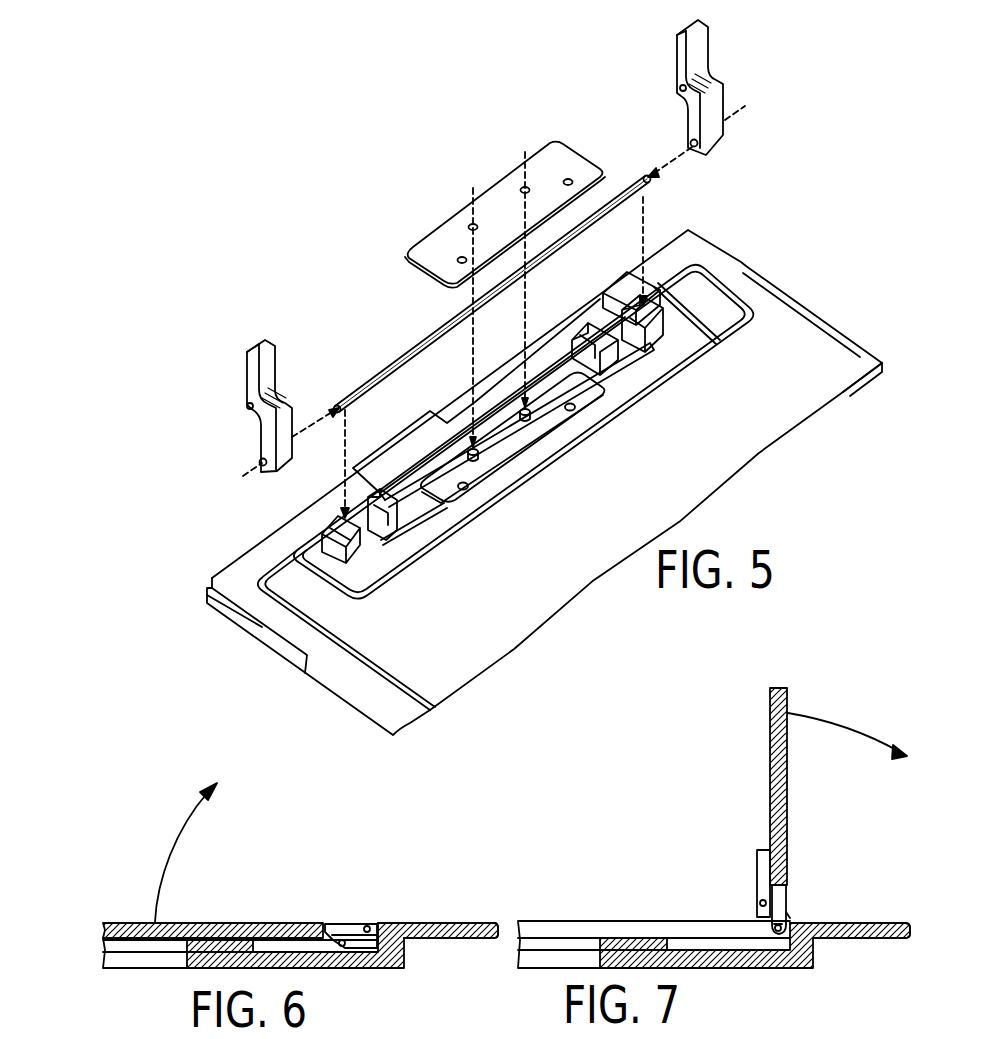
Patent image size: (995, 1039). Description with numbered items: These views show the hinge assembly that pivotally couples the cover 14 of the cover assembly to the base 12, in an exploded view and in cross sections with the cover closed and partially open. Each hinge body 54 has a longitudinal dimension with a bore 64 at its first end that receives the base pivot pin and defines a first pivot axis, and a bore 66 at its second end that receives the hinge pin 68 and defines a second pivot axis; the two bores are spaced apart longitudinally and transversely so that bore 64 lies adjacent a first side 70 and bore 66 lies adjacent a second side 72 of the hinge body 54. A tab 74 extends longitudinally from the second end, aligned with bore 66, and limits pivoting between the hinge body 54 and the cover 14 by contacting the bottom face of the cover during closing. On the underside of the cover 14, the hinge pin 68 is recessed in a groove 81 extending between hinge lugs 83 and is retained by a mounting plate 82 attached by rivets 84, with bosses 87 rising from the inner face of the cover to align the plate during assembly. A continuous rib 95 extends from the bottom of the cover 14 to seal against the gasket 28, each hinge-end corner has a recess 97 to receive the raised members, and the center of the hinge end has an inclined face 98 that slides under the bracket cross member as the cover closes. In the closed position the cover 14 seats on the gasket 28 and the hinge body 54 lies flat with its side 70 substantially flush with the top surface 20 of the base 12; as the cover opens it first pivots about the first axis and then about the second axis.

In FIG. 6, the base 12 is at (326, 978).
In FIG. 7, the base 12 is at (795, 980).
In FIG. 5, the cover 14 is at (270, 652).
In FIG. 6, the cover 14 is at (255, 913).
In FIG. 7, the cover 14 is at (800, 697).
In FIG. 6, the top surface 20 is at (465, 923).
In FIG. 7, the top surface 20 is at (876, 920).
In FIG. 6, the gasket 28 is at (180, 950).
In FIG. 7, the gasket 28 is at (628, 945).
In FIG. 5, the hinge body 54 is at (497, 246).
In FIG. 6, the hinge body 54 is at (360, 897).
In FIG. 7, the hinge body 54 is at (766, 907).
In FIG. 5, the bore 64 is at (258, 462).
In FIG. 6, the bore 64 is at (368, 928).
In FIG. 7, the bore 64 is at (778, 935).
In FIG. 5, the bore 66 is at (245, 407).
In FIG. 6, the bore 66 is at (341, 940).
In FIG. 7, the bore 66 is at (760, 903).
In FIG. 5, the hinge pin 68 is at (410, 347).
In FIG. 7, the first side 70 is at (791, 915).
In FIG. 7, the second side 72 is at (773, 928).
In FIG. 5, the tab 74 is at (272, 370).
In FIG. 7, the tab 74 is at (757, 856).
In FIG. 5, the groove 81 is at (404, 484).
In FIG. 5, the mounting plate 82 is at (443, 222).
In FIG. 5, the hinge lugs 83 is at (335, 537).
In FIG. 5, the rivets 84 is at (572, 407).
In FIG. 5, the bosses 87 is at (531, 418).
In FIG. 5, the continuous rib 95 is at (830, 357).
In FIG. 5, the recess 97 is at (225, 608).
In FIG. 5, the inclined face 98 is at (383, 442).